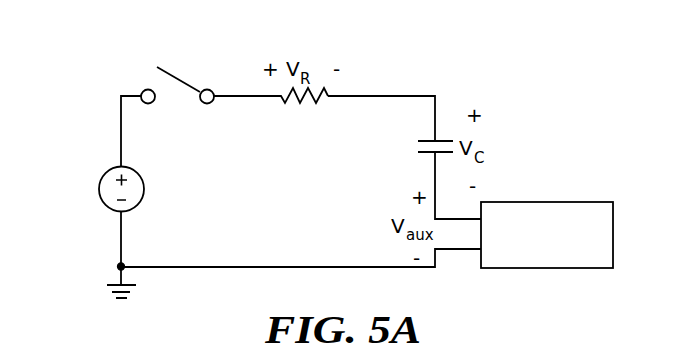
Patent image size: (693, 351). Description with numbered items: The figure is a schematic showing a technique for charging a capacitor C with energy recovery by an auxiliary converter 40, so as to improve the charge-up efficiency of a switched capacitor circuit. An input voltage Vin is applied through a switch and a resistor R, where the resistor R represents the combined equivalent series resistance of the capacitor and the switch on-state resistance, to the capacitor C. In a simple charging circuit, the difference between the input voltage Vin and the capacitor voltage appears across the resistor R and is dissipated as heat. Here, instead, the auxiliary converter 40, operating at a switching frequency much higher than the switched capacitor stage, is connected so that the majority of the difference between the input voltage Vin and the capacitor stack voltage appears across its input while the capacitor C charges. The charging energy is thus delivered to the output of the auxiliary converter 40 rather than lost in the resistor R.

The auxiliary converter 40 is at (570, 202).
The resistor R is at (303, 111).
The capacitor C is at (425, 146).
The input voltage Vin is at (104, 189).